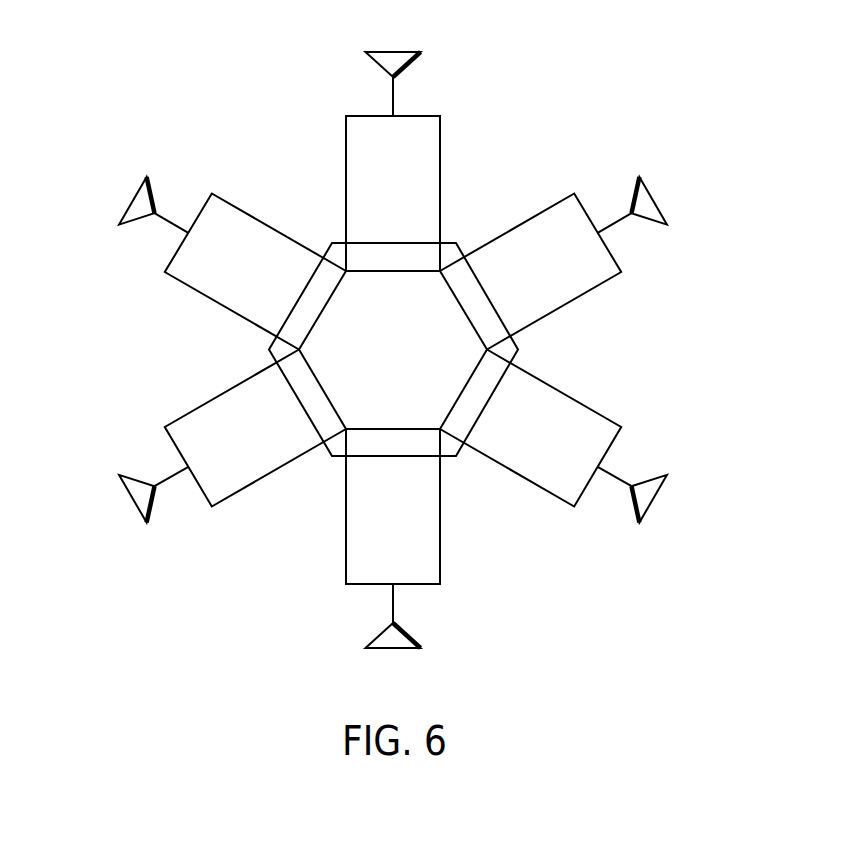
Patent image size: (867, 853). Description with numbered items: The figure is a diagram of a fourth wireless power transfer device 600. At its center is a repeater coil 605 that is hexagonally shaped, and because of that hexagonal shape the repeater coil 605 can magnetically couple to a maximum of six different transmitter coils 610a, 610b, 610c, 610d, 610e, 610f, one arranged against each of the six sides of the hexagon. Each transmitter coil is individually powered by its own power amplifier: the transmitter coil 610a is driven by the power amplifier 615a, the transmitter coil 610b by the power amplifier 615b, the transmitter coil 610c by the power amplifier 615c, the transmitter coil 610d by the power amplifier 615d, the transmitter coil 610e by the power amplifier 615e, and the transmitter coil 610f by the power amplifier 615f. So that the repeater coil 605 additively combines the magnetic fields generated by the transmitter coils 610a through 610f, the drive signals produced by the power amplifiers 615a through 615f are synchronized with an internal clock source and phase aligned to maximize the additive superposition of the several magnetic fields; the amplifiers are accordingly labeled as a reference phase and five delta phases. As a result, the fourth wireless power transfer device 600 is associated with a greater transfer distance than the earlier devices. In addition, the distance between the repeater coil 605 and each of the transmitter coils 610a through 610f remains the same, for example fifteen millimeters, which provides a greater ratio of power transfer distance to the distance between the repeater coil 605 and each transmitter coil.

The fourth wireless power transfer device 600 is at (646, 57).
The repeater coil 605 is at (514, 350).
The transmitter coil 610a is at (347, 194).
The transmitter coil 610b is at (240, 305).
The transmitter coil 610c is at (240, 393).
The transmitter coil 610d is at (355, 508).
The transmitter coil 610e is at (502, 452).
The transmitter coil 610f is at (555, 312).
The power amplifier 615a is at (380, 60).
The power amplifier 615b is at (129, 201).
The power amplifier 615c is at (132, 502).
The power amplifier 615d is at (381, 633).
The power amplifier 615e is at (657, 498).
The power amplifier 615f is at (657, 202).